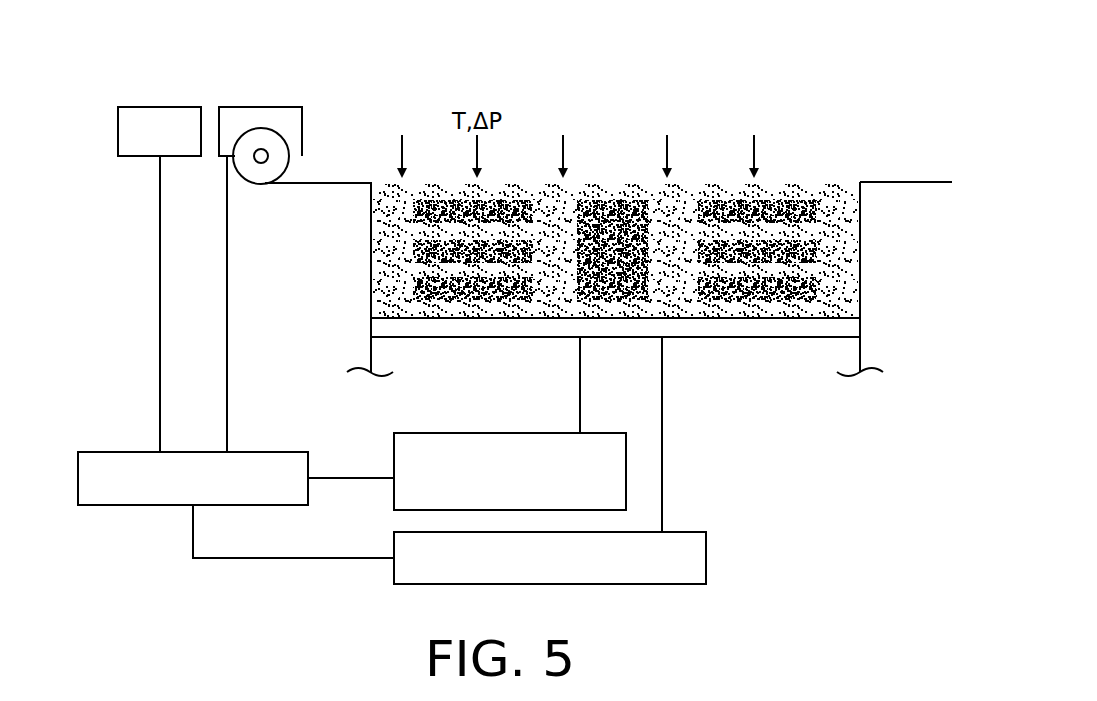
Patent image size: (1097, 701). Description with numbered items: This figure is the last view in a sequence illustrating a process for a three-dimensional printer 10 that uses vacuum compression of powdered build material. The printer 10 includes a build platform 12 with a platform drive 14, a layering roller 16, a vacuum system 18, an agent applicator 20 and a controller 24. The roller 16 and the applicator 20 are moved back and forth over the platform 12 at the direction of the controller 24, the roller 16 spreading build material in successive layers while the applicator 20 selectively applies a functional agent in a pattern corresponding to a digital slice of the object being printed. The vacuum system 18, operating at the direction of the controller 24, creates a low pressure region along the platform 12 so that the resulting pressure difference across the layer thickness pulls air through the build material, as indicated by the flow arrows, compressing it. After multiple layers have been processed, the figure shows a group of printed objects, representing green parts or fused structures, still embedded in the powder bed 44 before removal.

The 3D printer 10 is at (113, 64).
The build platform 12 is at (758, 330).
The platform drive 14 is at (430, 460).
The layering roller 16 is at (261, 118).
The vacuum system 18 is at (693, 556).
The agent applicator 20 is at (160, 118).
The controller 24 is at (118, 462).
The powder bed 44 is at (558, 300).